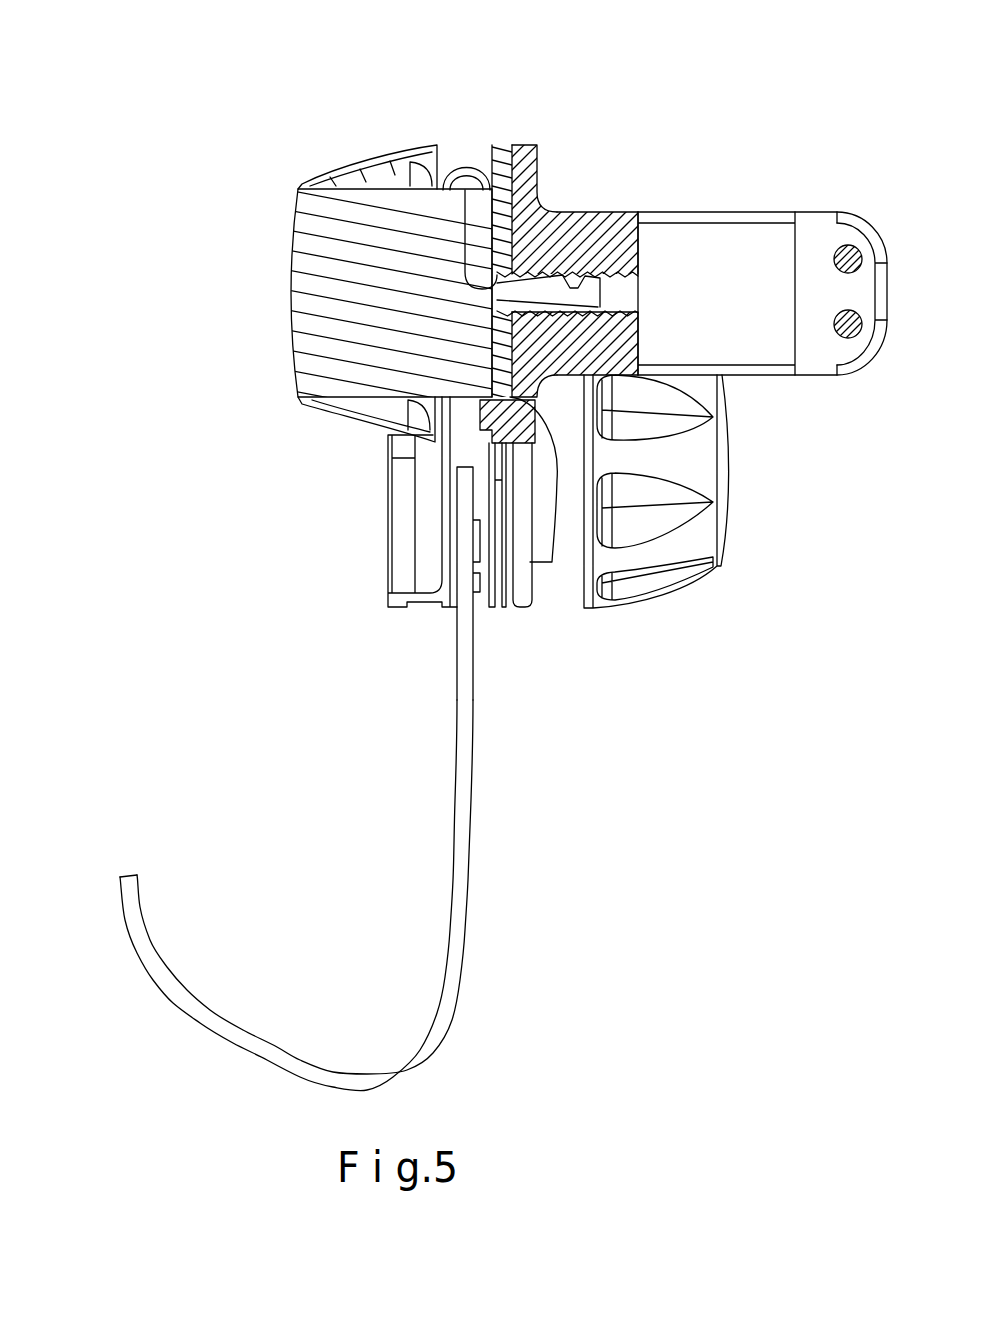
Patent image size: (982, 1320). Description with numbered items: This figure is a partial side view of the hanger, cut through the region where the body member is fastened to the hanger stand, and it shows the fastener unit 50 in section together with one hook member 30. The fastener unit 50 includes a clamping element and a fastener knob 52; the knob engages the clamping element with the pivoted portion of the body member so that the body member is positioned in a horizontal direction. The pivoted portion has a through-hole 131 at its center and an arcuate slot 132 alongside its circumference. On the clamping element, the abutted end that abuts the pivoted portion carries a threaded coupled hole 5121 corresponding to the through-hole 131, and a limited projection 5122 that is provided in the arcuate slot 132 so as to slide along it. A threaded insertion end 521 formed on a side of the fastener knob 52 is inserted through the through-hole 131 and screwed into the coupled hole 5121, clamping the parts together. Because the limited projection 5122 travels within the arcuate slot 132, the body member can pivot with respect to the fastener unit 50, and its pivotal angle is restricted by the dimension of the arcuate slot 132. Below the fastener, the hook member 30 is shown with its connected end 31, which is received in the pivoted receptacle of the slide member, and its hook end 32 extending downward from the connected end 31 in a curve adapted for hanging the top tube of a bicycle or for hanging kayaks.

The hook member 30 is at (337, 779).
The connected end 31 is at (463, 614).
The hook end 32 is at (143, 920).
The fastener unit 50 is at (779, 106).
The fastener knob 52 is at (303, 300).
The threaded insertion end 521 is at (540, 297).
The threaded coupled hole 5121 is at (585, 275).
The limited projection 5122 is at (480, 413).
The through-hole 131 is at (467, 270).
The arcuate slot 132 is at (553, 562).